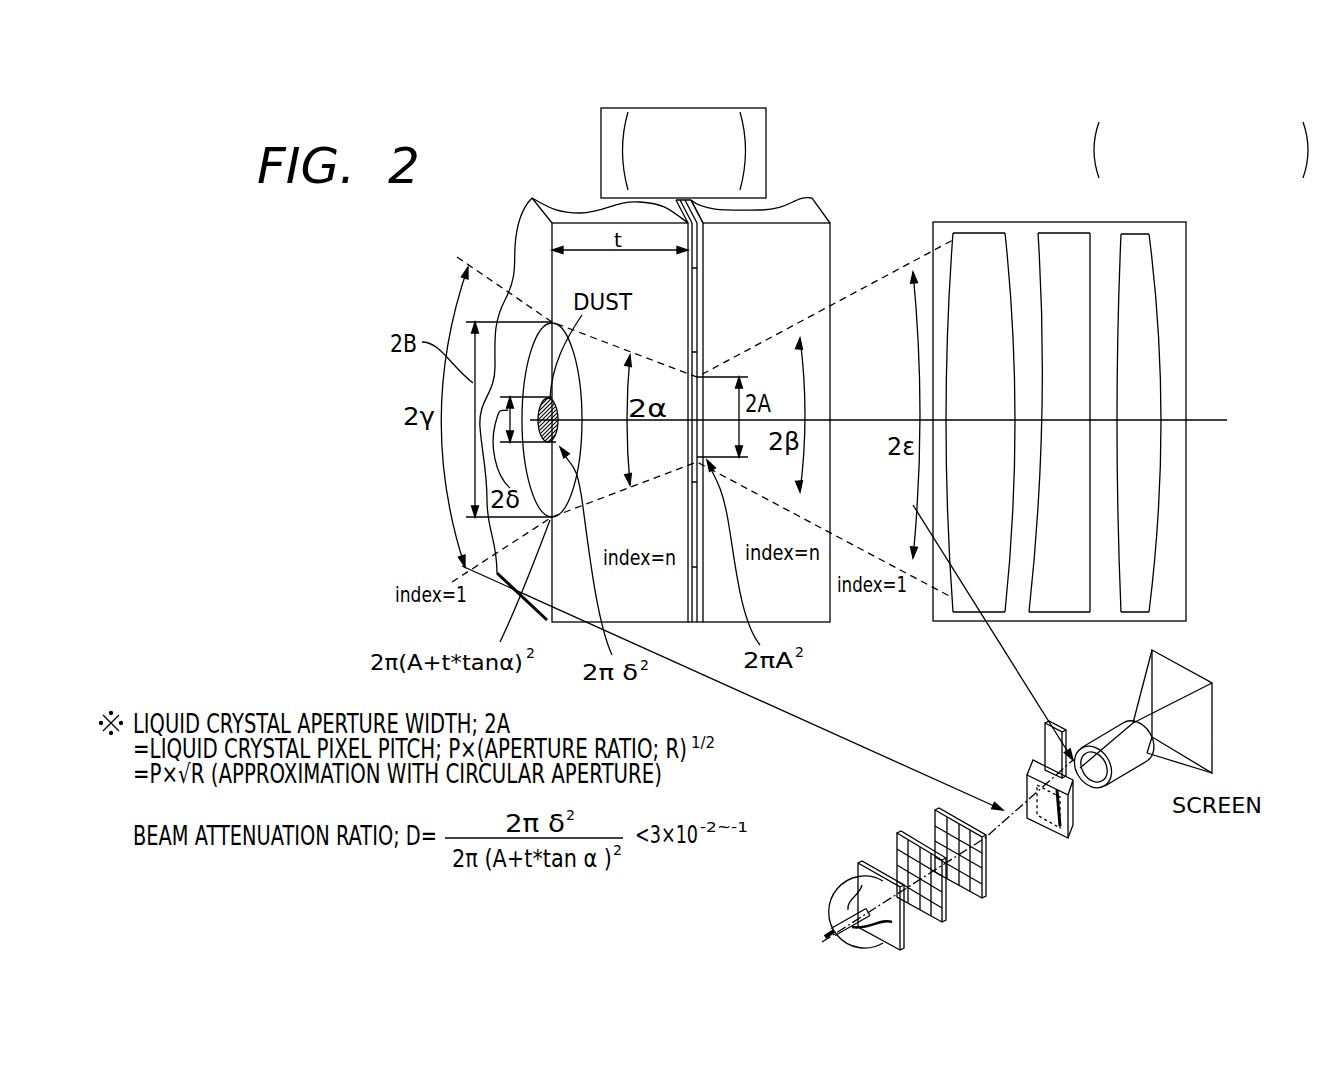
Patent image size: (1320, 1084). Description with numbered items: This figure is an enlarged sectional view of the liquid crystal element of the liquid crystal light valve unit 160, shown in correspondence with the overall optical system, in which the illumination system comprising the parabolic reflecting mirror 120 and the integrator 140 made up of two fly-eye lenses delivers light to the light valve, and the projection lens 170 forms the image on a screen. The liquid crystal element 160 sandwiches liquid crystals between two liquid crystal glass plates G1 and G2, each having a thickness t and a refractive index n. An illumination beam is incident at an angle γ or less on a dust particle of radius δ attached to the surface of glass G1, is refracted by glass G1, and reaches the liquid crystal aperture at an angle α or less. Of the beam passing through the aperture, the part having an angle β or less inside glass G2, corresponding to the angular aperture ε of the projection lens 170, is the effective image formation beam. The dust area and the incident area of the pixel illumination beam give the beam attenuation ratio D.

The parabolic reflecting mirror 120 is at (840, 898).
The integrator 140 is at (1003, 888).
The liquid crystal light valve unit 160 is at (601, 132).
The projection lens 170 is at (1062, 222).
The liquid crystal glass plate G1 is at (603, 215).
The liquid crystal glass plate G2 is at (777, 207).